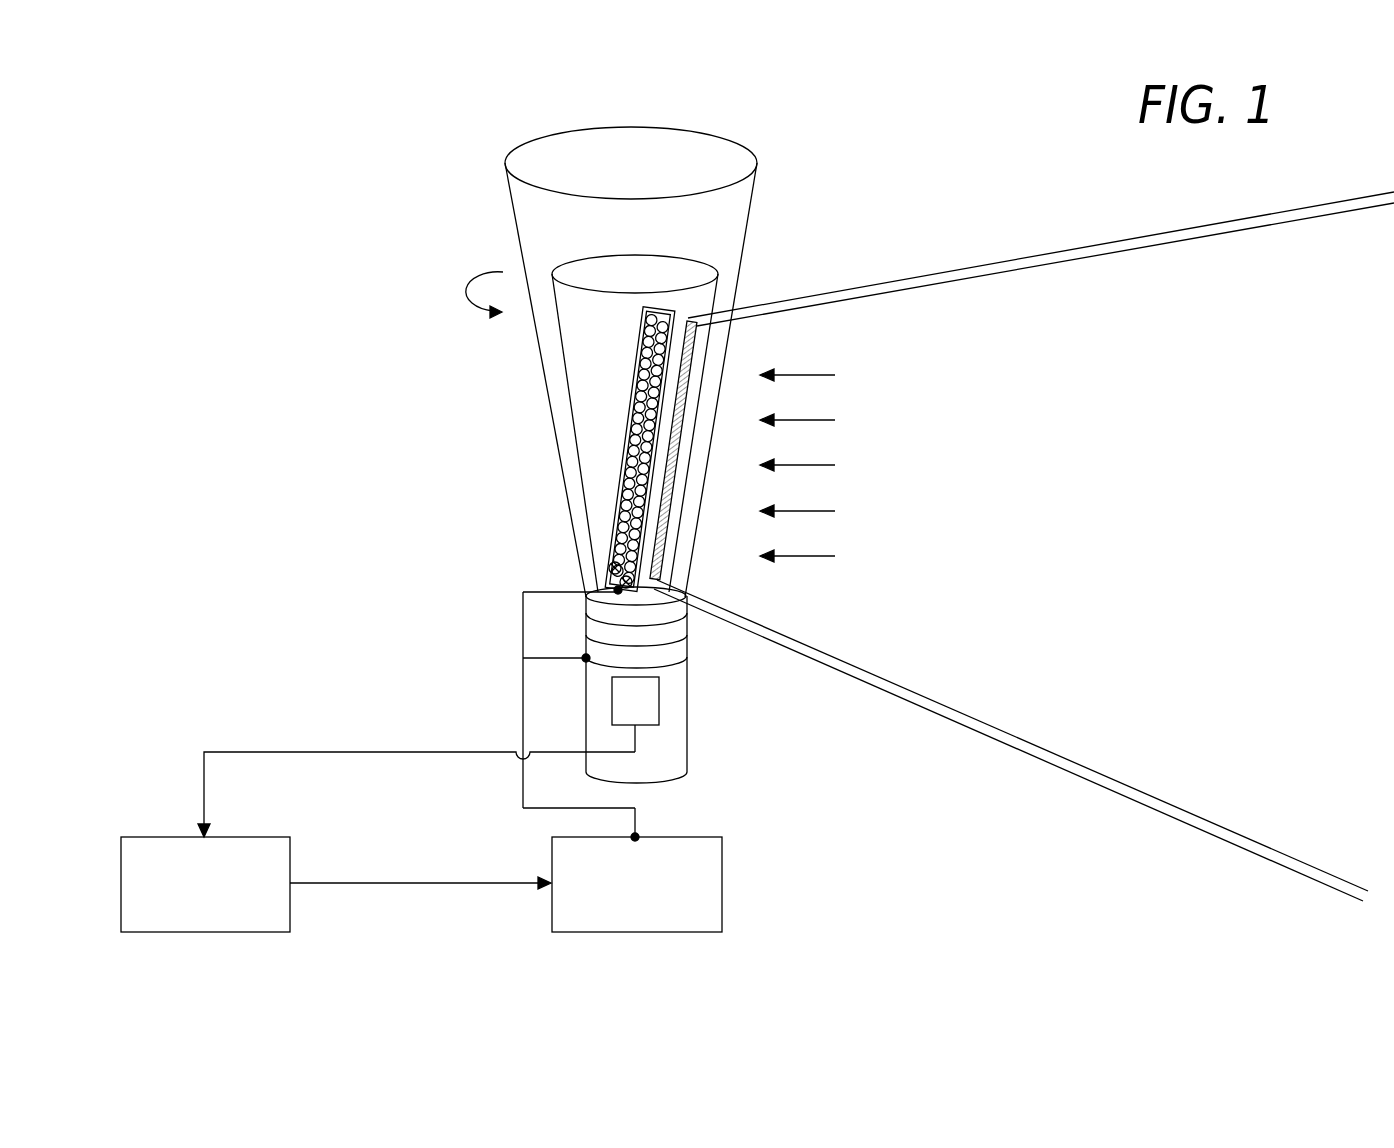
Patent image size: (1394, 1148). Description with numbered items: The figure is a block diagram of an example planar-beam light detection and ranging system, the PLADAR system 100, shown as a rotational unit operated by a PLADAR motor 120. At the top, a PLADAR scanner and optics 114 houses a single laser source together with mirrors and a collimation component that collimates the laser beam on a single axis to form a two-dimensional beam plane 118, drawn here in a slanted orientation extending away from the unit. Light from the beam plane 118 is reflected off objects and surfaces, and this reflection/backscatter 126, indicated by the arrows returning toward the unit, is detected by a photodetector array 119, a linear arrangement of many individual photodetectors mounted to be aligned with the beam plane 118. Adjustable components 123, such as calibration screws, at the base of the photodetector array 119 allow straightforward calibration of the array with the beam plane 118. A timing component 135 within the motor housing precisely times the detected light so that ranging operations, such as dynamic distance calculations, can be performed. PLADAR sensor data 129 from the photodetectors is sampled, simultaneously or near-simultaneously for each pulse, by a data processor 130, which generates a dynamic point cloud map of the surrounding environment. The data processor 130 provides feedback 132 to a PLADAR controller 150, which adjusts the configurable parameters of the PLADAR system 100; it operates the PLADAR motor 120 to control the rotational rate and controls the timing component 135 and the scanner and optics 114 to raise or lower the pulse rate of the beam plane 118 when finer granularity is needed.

The PLADAR system 100 is at (386, 108).
The PLADAR scanner and optics 114 is at (763, 364).
The beam plane 118 is at (1024, 546).
The photodetector array 119 is at (524, 449).
The PLADAR motor 120 is at (763, 695).
The adjustable components 123 is at (486, 546).
The reflection/backscatter 126 is at (853, 509).
The PLADAR sensor data 129 is at (416, 794).
The data processor 130 is at (205, 884).
The feedback 132 is at (420, 910).
The timing component 135 is at (714, 763).
The PLADAR controller 150 is at (622, 762).